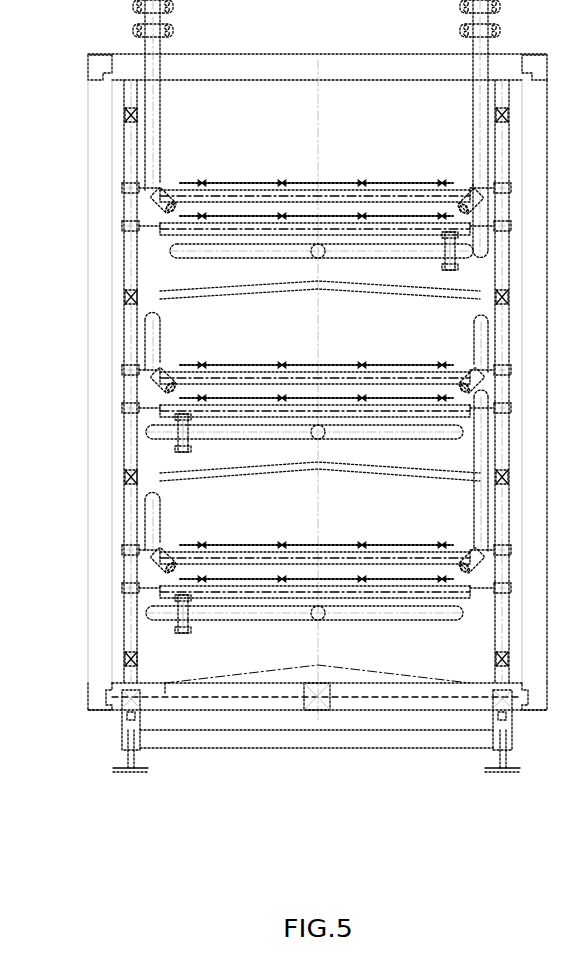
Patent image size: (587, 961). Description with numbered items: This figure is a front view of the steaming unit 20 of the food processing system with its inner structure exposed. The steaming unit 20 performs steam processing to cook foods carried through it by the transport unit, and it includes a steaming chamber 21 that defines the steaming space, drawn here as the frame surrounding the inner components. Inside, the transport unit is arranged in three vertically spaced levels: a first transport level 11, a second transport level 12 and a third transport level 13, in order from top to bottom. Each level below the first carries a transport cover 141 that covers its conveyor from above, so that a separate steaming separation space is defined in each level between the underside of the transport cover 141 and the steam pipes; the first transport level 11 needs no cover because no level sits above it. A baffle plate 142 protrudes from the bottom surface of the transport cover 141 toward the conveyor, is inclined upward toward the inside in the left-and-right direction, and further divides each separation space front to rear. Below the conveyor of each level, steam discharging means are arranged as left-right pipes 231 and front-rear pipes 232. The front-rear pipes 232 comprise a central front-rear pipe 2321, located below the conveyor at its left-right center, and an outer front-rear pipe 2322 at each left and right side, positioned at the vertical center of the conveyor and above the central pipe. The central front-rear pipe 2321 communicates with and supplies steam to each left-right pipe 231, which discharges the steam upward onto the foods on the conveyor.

The steaming unit 20 is at (311, 838).
The first transport level 11 is at (385, 184).
The second transport level 12 is at (357, 363).
The third transport level 13 is at (345, 542).
The transport cover 141 is at (222, 282).
The baffle plate 142 is at (224, 298).
The left-right pipe 231 is at (214, 437).
The front-rear pipe 232 is at (304, 564).
The central front-rear pipe 2321 is at (315, 440).
The outer front-rear pipe 2322 is at (170, 565).
The steaming chamber 21 is at (155, 722).